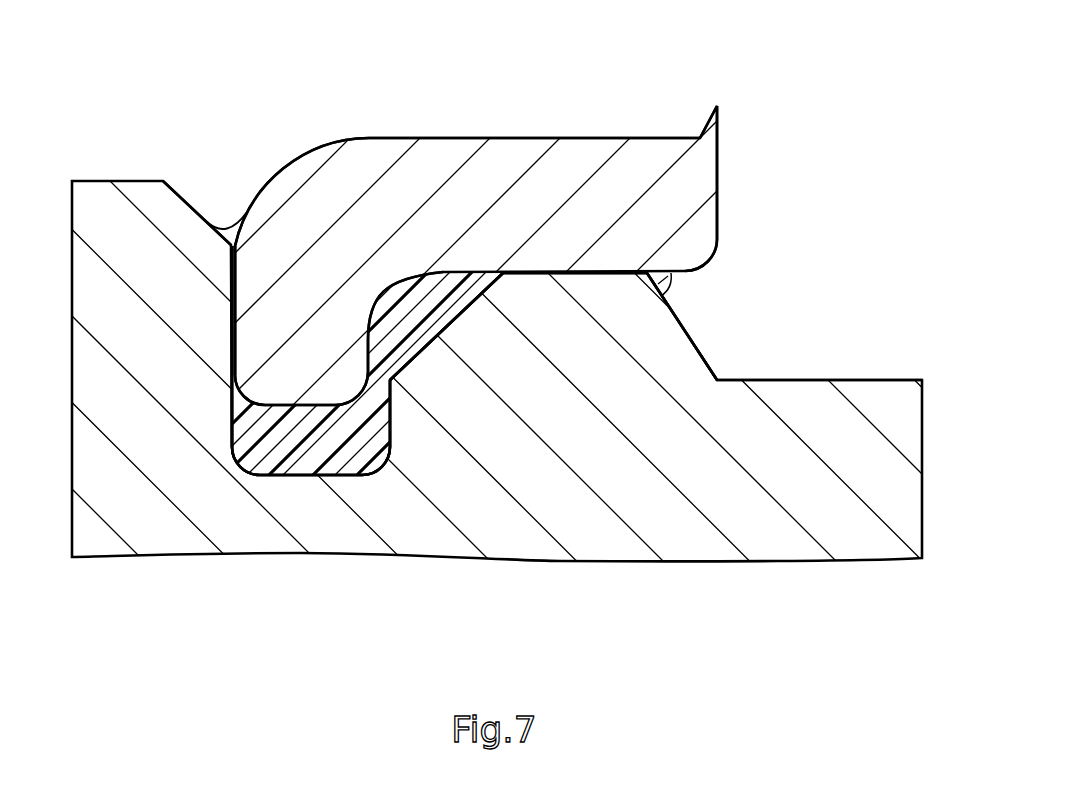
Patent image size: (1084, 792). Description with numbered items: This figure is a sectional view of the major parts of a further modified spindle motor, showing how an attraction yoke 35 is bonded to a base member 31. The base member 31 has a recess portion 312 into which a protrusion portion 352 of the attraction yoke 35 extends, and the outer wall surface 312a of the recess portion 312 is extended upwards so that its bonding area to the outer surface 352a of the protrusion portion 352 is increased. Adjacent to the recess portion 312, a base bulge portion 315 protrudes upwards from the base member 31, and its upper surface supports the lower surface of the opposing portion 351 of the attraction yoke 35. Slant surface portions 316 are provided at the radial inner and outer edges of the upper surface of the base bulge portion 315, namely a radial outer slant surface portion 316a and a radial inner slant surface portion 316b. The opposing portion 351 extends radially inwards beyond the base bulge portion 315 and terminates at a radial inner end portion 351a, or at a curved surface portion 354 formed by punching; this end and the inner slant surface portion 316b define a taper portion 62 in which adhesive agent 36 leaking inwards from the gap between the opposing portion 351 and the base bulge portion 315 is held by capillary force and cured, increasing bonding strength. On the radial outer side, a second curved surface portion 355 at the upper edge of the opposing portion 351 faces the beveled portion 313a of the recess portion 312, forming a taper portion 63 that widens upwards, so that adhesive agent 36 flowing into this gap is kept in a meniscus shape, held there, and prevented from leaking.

The base member 31 is at (505, 535).
The recess portion 312 is at (295, 440).
The outer wall surface of the recess portion 312a is at (233, 378).
The beveled portion of the recess portion 313a is at (186, 205).
The base bulge portion 315 is at (583, 310).
The slant surface portions 316 is at (763, 357).
The radial outer slant surface portion 316a is at (453, 327).
The radial inner slant surface portion 316b is at (703, 353).
The attraction yoke 35 is at (313, 65).
The opposing portion 351 is at (512, 162).
The radial inner end portion 351a is at (693, 192).
The protrusion portion 352 is at (345, 327).
The outer surface of the protrusion portion 352a is at (232, 331).
The curved surface portion 354 is at (703, 266).
The second curved surface portion 355 is at (273, 180).
The adhesive agent 36 is at (350, 457).
The taper portion 62 is at (670, 285).
The taper portion 63 is at (225, 222).